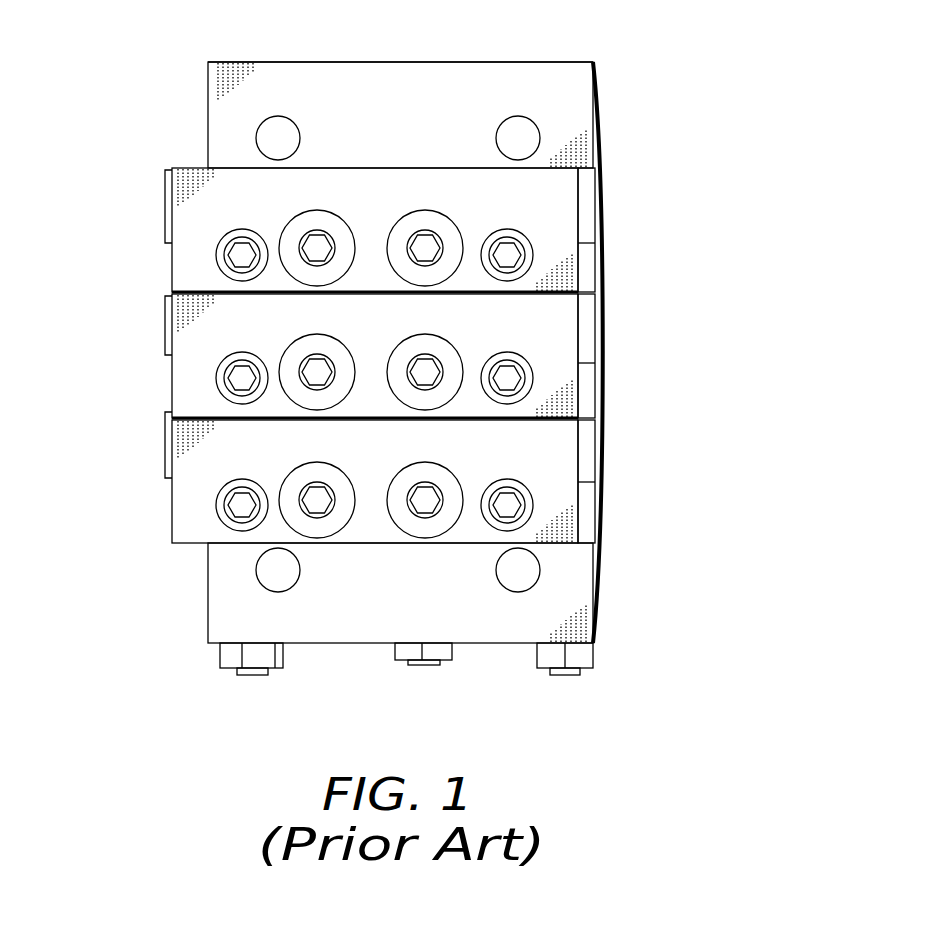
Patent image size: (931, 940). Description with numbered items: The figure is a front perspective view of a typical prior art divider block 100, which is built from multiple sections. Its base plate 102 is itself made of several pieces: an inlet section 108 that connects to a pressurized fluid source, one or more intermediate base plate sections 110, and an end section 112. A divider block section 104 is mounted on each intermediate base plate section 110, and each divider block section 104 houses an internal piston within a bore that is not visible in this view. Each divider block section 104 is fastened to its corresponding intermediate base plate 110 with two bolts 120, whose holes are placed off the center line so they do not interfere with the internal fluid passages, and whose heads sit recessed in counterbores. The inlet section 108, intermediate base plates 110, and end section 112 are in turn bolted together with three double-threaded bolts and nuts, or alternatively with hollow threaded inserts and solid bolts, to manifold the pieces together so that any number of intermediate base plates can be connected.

The divider block 100 is at (740, 38).
The base plate 102 is at (238, 62).
The divider block section 104 is at (185, 270).
The inlet section 108 is at (510, 62).
The intermediate base plate section 110 is at (600, 275).
The end section 112 is at (208, 606).
The bolt 120 is at (232, 250).